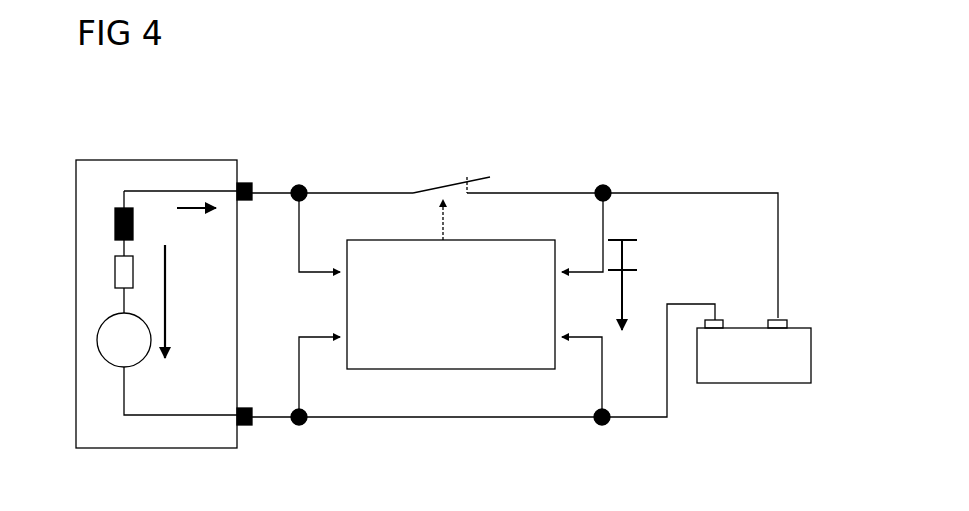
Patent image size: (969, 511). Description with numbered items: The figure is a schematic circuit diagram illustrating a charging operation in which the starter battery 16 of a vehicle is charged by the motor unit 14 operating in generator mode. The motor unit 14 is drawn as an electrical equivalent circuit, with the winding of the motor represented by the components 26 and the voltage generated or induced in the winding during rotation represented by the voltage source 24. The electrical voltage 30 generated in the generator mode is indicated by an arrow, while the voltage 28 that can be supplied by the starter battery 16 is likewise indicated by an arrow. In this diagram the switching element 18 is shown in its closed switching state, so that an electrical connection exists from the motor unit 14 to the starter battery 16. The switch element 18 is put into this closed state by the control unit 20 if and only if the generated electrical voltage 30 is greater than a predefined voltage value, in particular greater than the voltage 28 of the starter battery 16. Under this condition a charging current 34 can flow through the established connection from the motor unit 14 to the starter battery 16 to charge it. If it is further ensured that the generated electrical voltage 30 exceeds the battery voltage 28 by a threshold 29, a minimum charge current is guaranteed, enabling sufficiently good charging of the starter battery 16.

The motor unit 14 is at (97, 160).
The starter battery 16 is at (813, 353).
The switching element 18 is at (455, 165).
The control unit 20 is at (443, 368).
The voltage source 24 is at (97, 347).
The components 26 is at (104, 206).
The voltage 28 is at (623, 293).
The threshold 29 is at (625, 257).
The electrical voltage 30 is at (168, 300).
The charging current 34 is at (197, 203).